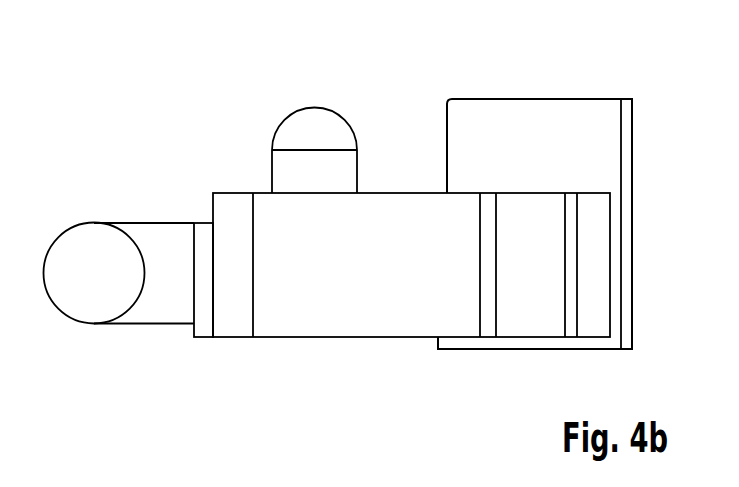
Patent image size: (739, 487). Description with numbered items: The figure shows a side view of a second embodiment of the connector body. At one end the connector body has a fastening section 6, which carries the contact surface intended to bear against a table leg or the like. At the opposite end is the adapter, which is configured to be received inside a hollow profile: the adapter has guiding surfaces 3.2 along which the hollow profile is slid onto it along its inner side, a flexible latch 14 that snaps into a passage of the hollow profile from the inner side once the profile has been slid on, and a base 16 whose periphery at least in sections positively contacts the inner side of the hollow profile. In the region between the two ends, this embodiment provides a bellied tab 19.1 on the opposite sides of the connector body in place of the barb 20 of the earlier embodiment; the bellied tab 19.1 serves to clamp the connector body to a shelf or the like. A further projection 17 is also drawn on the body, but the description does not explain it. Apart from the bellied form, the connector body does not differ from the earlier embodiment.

The flexible latch 14 is at (92, 257).
The guiding surfaces 3.2 is at (153, 222).
The base 16 is at (203, 240).
The barb 20 is at (403, 222).
The bellied tab 19.1 is at (530, 222).
The plug connector 17 is at (313, 127).
The fastening section 6 is at (543, 118).